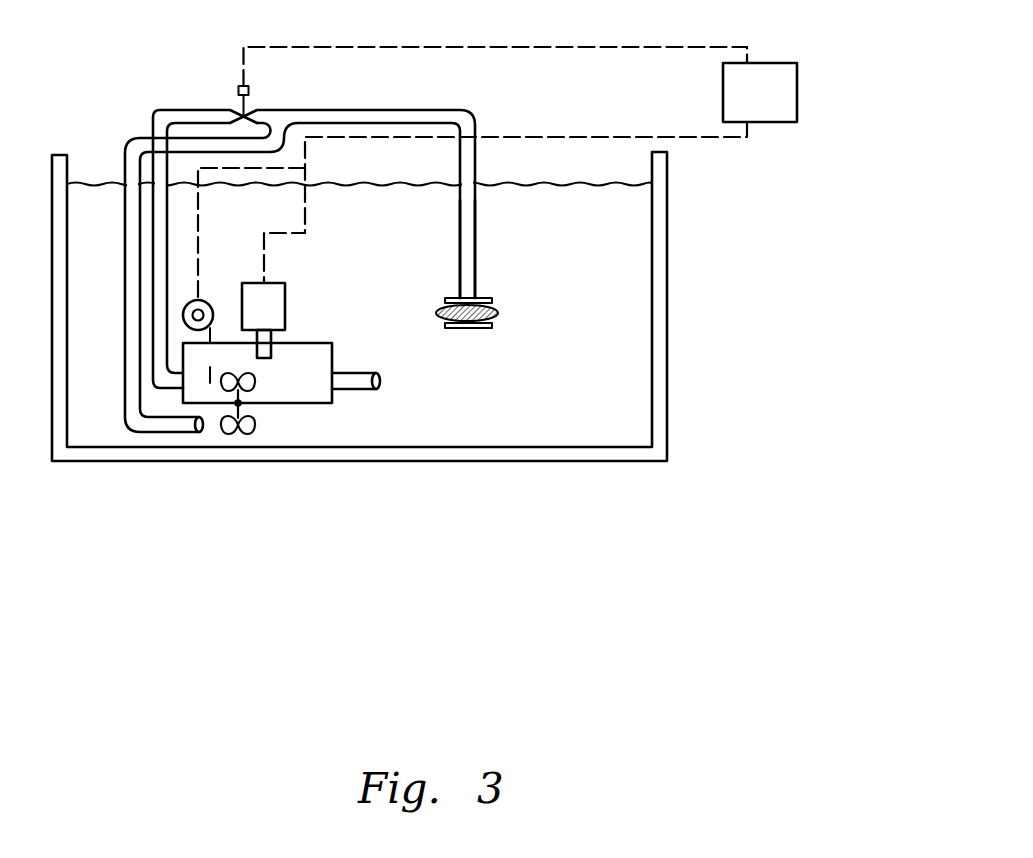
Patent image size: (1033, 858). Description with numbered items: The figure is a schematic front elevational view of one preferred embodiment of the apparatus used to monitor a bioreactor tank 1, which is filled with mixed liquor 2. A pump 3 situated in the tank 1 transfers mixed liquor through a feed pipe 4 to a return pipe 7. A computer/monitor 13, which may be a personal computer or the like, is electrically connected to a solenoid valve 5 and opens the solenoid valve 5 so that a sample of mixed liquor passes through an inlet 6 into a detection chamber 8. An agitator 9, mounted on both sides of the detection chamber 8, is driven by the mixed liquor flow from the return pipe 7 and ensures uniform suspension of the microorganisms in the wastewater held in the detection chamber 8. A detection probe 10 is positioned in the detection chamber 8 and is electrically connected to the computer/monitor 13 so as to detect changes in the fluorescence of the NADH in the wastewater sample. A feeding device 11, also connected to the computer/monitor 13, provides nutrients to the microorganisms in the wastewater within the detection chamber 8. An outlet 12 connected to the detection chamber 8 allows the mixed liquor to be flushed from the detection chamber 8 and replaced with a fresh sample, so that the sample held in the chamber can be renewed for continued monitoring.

The bioreactor tank 1 is at (667, 250).
The mixed liquor 2 is at (630, 327).
The pump 3 is at (497, 308).
The feed pipe 4 is at (476, 226).
The solenoid valve 5 is at (233, 90).
The inlet 6 is at (157, 113).
The return pipe 7 is at (123, 143).
The detection chamber 8 is at (320, 403).
The agitator 9 is at (257, 425).
The detection probe 10 is at (287, 308).
The feeding device 11 is at (203, 299).
The outlet 12 is at (352, 358).
The computer/monitor 13 is at (780, 62).